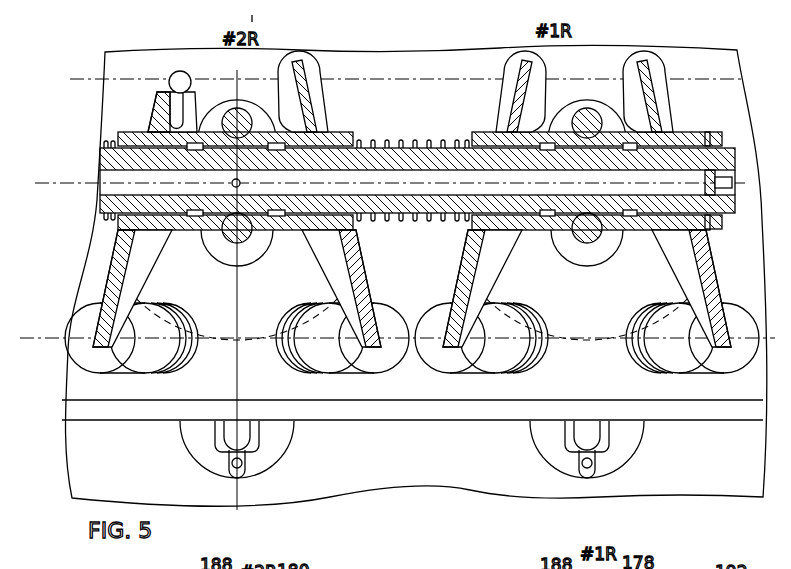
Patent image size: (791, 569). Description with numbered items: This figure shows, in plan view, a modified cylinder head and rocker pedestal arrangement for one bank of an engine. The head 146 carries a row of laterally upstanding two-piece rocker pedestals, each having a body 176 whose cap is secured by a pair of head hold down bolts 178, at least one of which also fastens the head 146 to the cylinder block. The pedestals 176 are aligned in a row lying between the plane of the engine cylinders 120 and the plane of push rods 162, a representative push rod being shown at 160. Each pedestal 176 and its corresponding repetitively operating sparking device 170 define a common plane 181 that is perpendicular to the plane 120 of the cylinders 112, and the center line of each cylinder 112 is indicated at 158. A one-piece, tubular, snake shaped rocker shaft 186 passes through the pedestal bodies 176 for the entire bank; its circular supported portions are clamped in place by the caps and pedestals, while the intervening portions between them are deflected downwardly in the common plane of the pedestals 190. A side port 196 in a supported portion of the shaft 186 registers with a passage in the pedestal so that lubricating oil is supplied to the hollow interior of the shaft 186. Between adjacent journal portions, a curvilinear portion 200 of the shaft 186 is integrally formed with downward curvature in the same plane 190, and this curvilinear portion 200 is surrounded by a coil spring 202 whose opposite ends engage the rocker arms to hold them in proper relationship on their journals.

The cylinders 112 is at (152, 458).
The plane of the engine cylinders 120 is at (42, 338).
The head 146 is at (470, 471).
The center line of each cylinder 158 is at (230, 340).
The push rod 160 is at (180, 71).
The plane of push rods 162 is at (93, 79).
The sparking device 170 is at (253, 450).
The rocker pedestal body 176 is at (253, 250).
The head hold down bolts 178 is at (580, 108).
The common plane 181 is at (238, 488).
The rocker shaft 186 is at (725, 131).
The common plane of the pedestals 190 is at (50, 183).
The side port 196 is at (241, 184).
The curvilinear portion 200 is at (406, 215).
The coil spring 202 is at (432, 140).